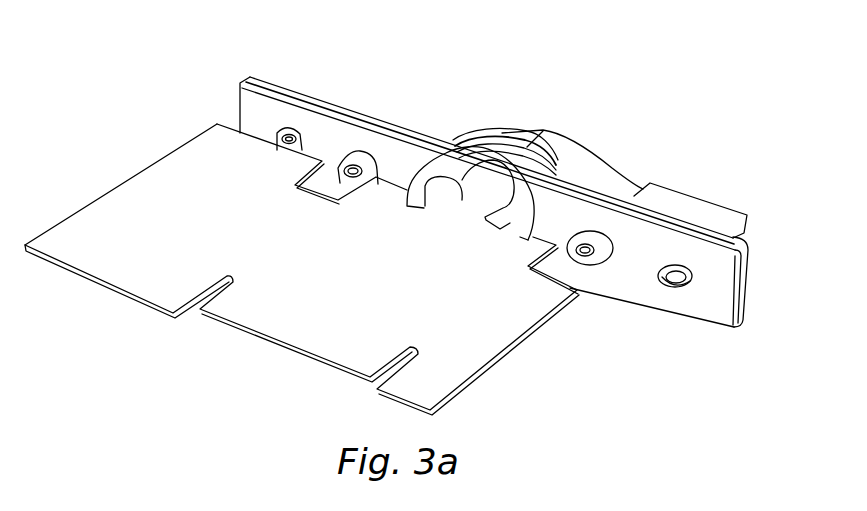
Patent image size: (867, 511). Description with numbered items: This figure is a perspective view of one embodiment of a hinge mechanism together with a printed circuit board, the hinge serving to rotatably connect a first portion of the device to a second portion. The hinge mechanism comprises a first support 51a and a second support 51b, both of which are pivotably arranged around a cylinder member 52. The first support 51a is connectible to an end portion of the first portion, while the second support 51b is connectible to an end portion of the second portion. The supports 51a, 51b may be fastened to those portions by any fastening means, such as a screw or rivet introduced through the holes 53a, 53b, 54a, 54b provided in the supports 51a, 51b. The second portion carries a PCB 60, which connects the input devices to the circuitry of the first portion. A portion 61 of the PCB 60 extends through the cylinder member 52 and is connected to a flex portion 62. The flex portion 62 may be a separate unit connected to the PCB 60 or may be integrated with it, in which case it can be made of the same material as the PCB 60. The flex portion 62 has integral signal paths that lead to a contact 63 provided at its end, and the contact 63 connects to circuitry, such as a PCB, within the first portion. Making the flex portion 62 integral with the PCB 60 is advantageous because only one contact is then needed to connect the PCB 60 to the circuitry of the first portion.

The first support 51a is at (747, 284).
The second support 51b is at (737, 328).
The cylinder member 52 is at (505, 134).
The hole 53a is at (671, 275).
The hole 53b is at (668, 266).
The hole 54a is at (283, 140).
The hole 54b is at (273, 130).
The PCB 60 is at (465, 348).
The portion of the PCB 61 is at (466, 202).
The flex portion 62 is at (573, 158).
The contact 63 is at (697, 203).